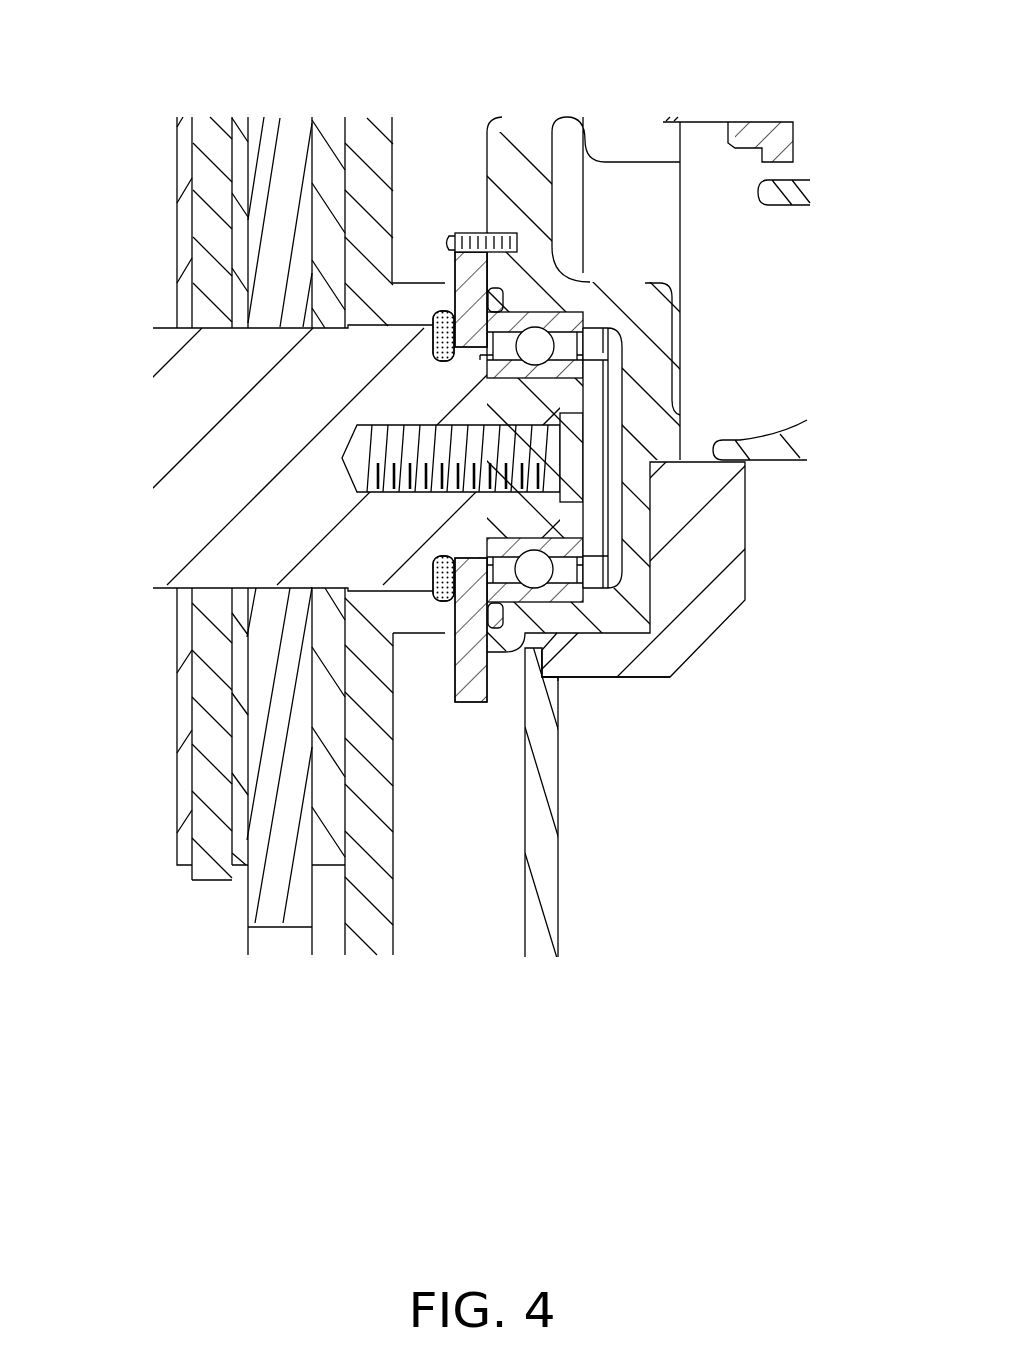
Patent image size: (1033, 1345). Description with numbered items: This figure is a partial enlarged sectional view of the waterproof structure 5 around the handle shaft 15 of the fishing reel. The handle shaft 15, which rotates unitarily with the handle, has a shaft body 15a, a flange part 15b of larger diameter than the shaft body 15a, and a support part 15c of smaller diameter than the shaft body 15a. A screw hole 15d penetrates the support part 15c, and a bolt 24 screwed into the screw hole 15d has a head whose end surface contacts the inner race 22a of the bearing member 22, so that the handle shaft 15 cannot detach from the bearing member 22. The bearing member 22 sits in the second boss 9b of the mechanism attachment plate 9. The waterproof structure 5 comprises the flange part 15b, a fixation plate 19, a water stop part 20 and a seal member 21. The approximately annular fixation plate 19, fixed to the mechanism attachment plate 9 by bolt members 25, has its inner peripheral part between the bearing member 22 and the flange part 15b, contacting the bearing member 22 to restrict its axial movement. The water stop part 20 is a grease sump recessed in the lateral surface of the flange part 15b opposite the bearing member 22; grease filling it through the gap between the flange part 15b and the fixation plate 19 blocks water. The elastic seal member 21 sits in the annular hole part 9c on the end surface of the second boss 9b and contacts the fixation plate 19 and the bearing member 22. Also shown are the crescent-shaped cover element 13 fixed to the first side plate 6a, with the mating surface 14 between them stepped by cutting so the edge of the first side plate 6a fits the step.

The waterproof structure 5 is at (432, 905).
The first side plate 6a is at (677, 652).
The mechanism attachment plate 9 is at (534, 143).
The second boss 9b is at (663, 443).
The hole part 9c is at (470, 310).
The cover element 13 is at (550, 890).
The mating surface 14 is at (568, 685).
The handle shaft 15 is at (150, 318).
The shaft body 15a is at (247, 455).
The flange part 15b is at (417, 281).
The support part 15c is at (527, 397).
The screw hole 15d is at (400, 428).
The fixation plate 19 is at (472, 652).
The water stop part 20 is at (450, 608).
The seal member 21 is at (500, 618).
The bearing member 22 is at (590, 282).
The inner race 22a is at (572, 343).
The bolt 24 is at (590, 447).
The bolt member 25 is at (452, 232).